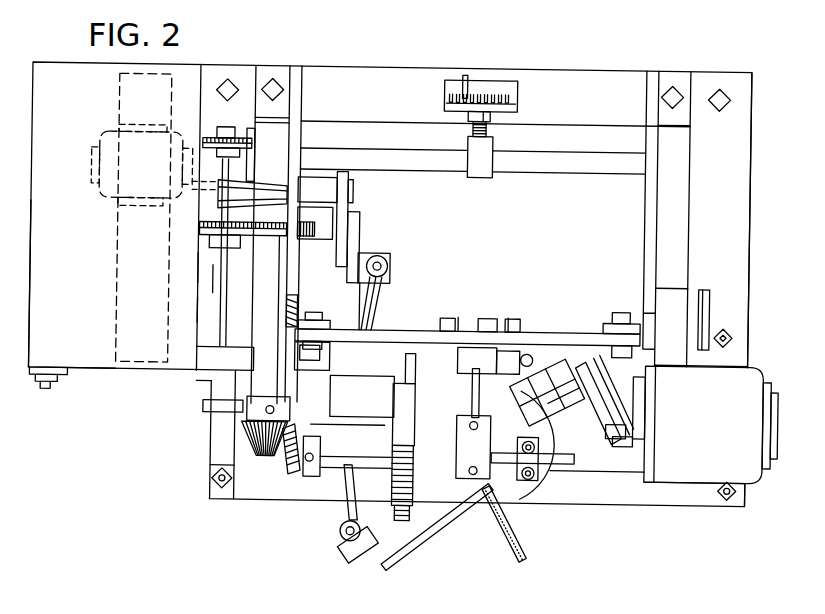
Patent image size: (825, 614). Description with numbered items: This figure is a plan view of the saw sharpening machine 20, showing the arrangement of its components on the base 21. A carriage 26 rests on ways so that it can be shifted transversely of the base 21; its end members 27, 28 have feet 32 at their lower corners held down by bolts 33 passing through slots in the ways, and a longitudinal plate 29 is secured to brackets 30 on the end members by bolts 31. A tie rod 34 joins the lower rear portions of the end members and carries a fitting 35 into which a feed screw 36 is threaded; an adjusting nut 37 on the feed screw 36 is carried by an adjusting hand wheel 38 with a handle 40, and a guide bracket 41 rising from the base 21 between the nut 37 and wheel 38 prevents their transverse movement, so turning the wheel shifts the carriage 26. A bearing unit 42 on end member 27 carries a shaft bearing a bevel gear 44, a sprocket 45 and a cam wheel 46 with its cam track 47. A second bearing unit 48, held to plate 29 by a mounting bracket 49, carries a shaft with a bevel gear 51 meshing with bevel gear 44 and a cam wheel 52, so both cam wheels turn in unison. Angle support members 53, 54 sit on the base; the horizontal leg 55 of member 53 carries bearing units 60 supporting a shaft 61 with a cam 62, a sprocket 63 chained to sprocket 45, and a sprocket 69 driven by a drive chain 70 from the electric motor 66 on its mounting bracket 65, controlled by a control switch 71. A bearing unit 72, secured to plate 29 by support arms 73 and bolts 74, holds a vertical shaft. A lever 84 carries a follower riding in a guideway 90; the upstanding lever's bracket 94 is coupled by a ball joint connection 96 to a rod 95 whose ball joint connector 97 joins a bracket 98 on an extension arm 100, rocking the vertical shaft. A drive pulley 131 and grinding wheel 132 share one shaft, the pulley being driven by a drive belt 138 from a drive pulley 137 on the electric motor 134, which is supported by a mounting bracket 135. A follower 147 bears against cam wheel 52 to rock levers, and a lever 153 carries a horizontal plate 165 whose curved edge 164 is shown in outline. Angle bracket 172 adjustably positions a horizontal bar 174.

The saw sharpening machine 20 is at (590, 64).
The base 21 is at (98, 370).
The carriage 26 is at (647, 199).
The end member 27 is at (292, 291).
The end member 28 is at (647, 236).
The plate 29 is at (546, 324).
The brackets 30 is at (322, 326).
The bolts 31 is at (316, 308).
The feet 32 is at (278, 62).
The hold-down bolts 33 is at (284, 88).
The tie rod 34 is at (533, 166).
The fitting 35 is at (485, 172).
The feed screw 36 is at (474, 122).
The adjusting nut 37 is at (492, 112).
The adjusting hand wheel 38 is at (519, 90).
The handle 40 is at (468, 68).
The guide bracket 41 is at (445, 96).
The bearing unit 42 is at (268, 286).
The bevel gear 44 is at (246, 437).
The sprocket 45 is at (258, 238).
The cam wheel 46 is at (224, 229).
The cam track 47 is at (222, 190).
The bearing unit 48 is at (338, 468).
The mounting bracket 49 is at (340, 403).
The bevel gear 51 is at (283, 494).
The cam wheel 52 is at (391, 538).
The angle support member 53 is at (200, 390).
The angle support member 54 is at (752, 260).
The horizontal leg 55 is at (204, 304).
The bearing units 60 is at (200, 160).
The shaft 61 is at (220, 274).
The cam 62 is at (212, 409).
The sprocket 63 is at (204, 262).
The mounting bracket 65 is at (116, 302).
The electric motor 66 is at (103, 203).
The sprocket 69 is at (224, 130).
The drive chain 70 is at (250, 138).
The control switch 71 is at (50, 390).
The bearing unit 72 is at (481, 493).
The support arms 73 is at (444, 350).
The bolts 74 is at (512, 312).
The lever 84 is at (340, 242).
The guideway 90 is at (363, 238).
The bracket 94 is at (400, 278).
The rod 95 is at (384, 314).
The ball joint connection 96 is at (392, 255).
The ball joint connector 97 is at (347, 528).
The bracket 98 is at (353, 550).
The extension arm 100 is at (423, 521).
The drive pulley 131 is at (651, 362).
The grinding wheel 132 is at (505, 536).
The electric motor 134 is at (702, 476).
The mounting bracket 135 is at (706, 279).
The drive pulley 137 is at (638, 436).
The drive belt 138 is at (631, 427).
The follower 147 is at (411, 386).
The lever 153 is at (581, 452).
The curved edge 164 is at (561, 508).
The plate 165 is at (537, 509).
The angle bracket 172 is at (215, 463).
The bar 174 is at (637, 497).